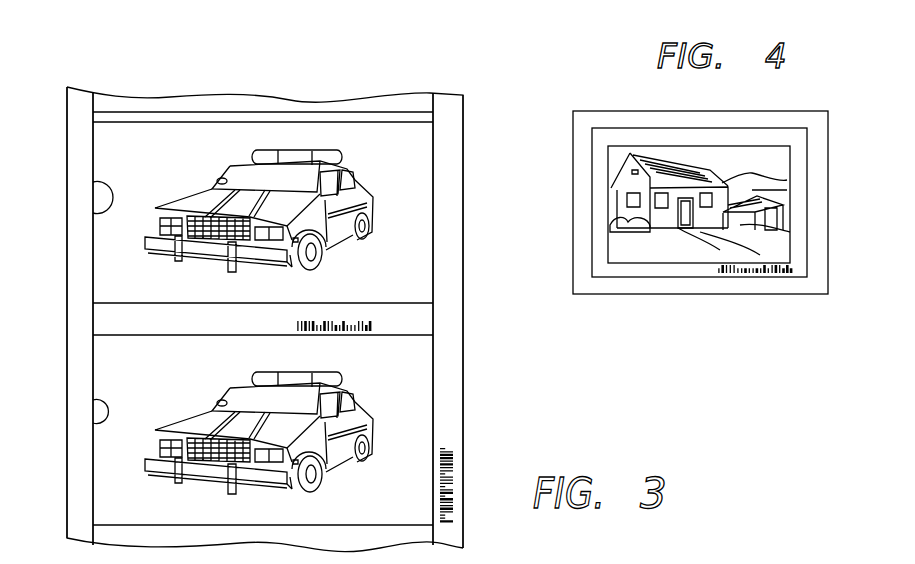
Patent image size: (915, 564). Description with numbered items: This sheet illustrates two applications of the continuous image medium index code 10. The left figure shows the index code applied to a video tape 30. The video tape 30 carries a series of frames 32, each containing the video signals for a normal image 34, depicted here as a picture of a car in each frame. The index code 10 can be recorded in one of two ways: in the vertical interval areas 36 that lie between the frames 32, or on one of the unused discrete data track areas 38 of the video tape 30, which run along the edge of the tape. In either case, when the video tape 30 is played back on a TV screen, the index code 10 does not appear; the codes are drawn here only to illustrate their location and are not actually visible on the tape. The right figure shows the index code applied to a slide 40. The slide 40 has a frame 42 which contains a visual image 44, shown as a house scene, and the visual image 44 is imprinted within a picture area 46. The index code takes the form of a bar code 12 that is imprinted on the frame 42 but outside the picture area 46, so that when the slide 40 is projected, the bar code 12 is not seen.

In FIG. 3, the index code 10 is at (490, 470).
In FIG. 4, the bar code 12 is at (793, 268).
In FIG. 3, the video tape 30 is at (465, 148).
In FIG. 3, the frames 32 is at (93, 423).
In FIG. 3, the normal image 34 is at (472, 417).
In FIG. 3, the vertical interval areas 36 is at (107, 322).
In FIG. 3, the discrete data track areas 38 is at (67, 238).
In FIG. 4, the slide 40 is at (723, 294).
In FIG. 4, the frame 42 is at (658, 128).
In FIG. 4, the visual image 44 is at (612, 207).
In FIG. 4, the picture area 46 is at (790, 153).